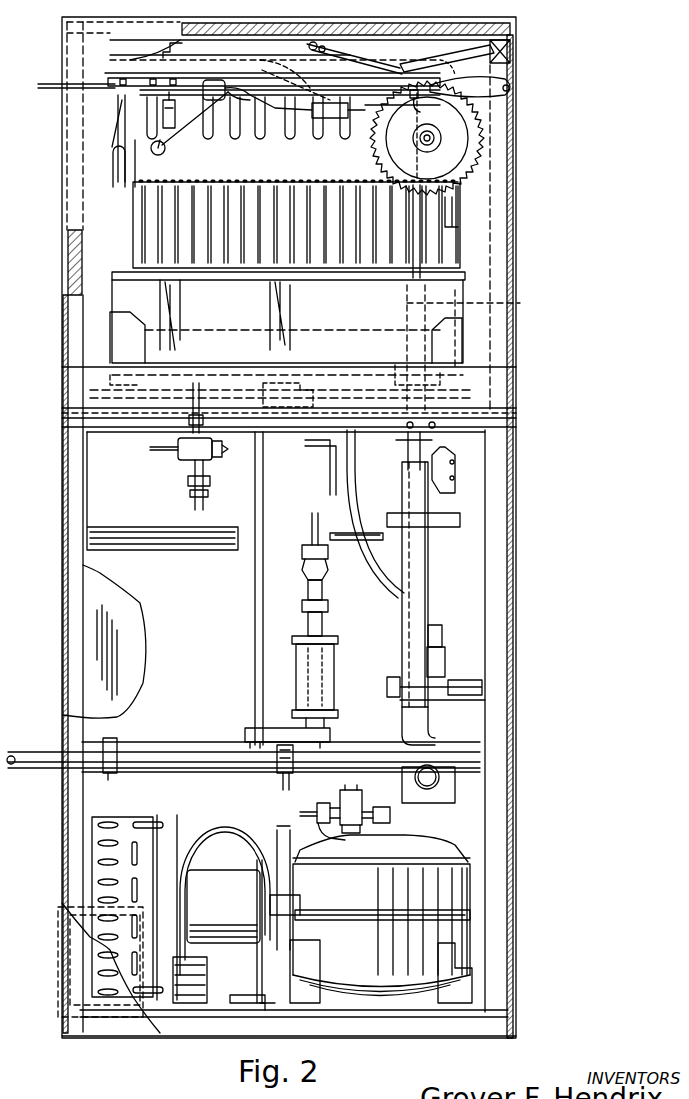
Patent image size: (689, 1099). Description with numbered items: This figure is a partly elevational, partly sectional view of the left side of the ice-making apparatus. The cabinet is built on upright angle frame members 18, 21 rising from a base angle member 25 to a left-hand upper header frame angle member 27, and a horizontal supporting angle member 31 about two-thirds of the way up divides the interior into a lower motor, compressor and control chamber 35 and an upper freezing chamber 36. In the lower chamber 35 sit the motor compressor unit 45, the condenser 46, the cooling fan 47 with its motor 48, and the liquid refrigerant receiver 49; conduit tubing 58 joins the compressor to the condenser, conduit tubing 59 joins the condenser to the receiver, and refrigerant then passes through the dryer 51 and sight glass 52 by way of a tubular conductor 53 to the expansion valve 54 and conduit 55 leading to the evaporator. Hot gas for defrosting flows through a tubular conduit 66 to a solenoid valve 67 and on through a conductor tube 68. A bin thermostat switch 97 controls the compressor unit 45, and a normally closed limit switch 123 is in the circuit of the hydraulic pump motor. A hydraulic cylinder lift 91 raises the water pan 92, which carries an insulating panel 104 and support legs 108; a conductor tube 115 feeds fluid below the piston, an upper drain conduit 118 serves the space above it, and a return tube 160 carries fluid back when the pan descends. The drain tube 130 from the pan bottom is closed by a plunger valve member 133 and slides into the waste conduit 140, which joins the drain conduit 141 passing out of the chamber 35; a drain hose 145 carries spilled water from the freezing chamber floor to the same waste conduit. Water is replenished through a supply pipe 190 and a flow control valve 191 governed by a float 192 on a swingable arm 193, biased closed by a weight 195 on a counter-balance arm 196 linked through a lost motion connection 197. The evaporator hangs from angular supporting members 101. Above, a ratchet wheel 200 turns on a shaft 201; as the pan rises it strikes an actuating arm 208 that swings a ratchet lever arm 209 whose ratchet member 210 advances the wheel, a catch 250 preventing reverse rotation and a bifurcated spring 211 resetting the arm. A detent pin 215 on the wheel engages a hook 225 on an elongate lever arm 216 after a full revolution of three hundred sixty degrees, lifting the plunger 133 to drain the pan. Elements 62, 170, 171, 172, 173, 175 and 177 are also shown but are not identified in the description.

The upright angle frame member 18 is at (497, 817).
The upright angle frame member 21 is at (68, 788).
The base angle member 25 is at (183, 1015).
The left hand upper header frame angle member 27 is at (130, 60).
The horizontal supporting angle member 31 is at (65, 413).
The lower motor, compressor and control chamber 35 is at (508, 552).
The upper freezing chamber 36 is at (90, 331).
The motor compressor unit 45 is at (462, 888).
The condenser 46 is at (100, 862).
The cooling fan 47 is at (185, 870).
The motor 48 is at (228, 830).
The liquid refrigerant receiver 49 is at (265, 1005).
The dryer 51 is at (336, 676).
The sight glass 52 is at (324, 585).
The tubular conductor 53 is at (200, 505).
The expansion valve 54 is at (200, 468).
The conduit 55 is at (185, 395).
The conduit tubing 58 is at (152, 817).
The conduit tubing 59 is at (290, 932).
The relay 62 is at (446, 668).
The tubular conduit 66 is at (395, 815).
The solenoid valve 67 is at (356, 800).
The conductor tube 68 is at (325, 806).
The hydraulic cylinder lift 91 is at (270, 589).
The water pan 92 is at (240, 309).
The bin thermostat switch 97 is at (443, 635).
The angular supporting members 101 is at (178, 42).
The insulating panel 104 is at (348, 322).
The support brackets 108 is at (148, 318).
The conductor tube 115 is at (282, 790).
The upper drain conduit 118 is at (340, 482).
The limit switch 123 is at (445, 470).
The drain tube 130 is at (405, 446).
The plunger valve member 133 is at (512, 303).
The waste conduit 140 is at (405, 485).
The drain conduit 141 is at (36, 755).
The drain hose 145 is at (375, 585).
The return tube 160 is at (330, 834).
The evaporator tube bundle 170 is at (168, 232).
The rail 171 is at (332, 182).
The link 172 is at (112, 126).
The side plate 173 is at (115, 96).
The frame member 175 is at (125, 195).
The bracket 177 is at (117, 148).
The water supply pipe 190 is at (52, 84).
The flow control valve 191 is at (210, 78).
The float 192 is at (340, 122).
The swingable arm 193 is at (300, 128).
The weight 195 is at (158, 152).
The counter-balance arm 196 is at (195, 130).
The lost motion connection 197 is at (262, 128).
The ratchet wheel 200 is at (470, 125).
The shaft 201 is at (432, 140).
The swingable actuating arm 208 is at (263, 85).
The ratchet lever arm 209 is at (358, 55).
The ratchet member 210 is at (405, 55).
The bifurcated spring 211 is at (310, 88).
The detent pin 215 is at (432, 132).
The elongate lever arm 216 is at (455, 65).
The hook 225 is at (495, 100).
The catch 250 is at (497, 64).